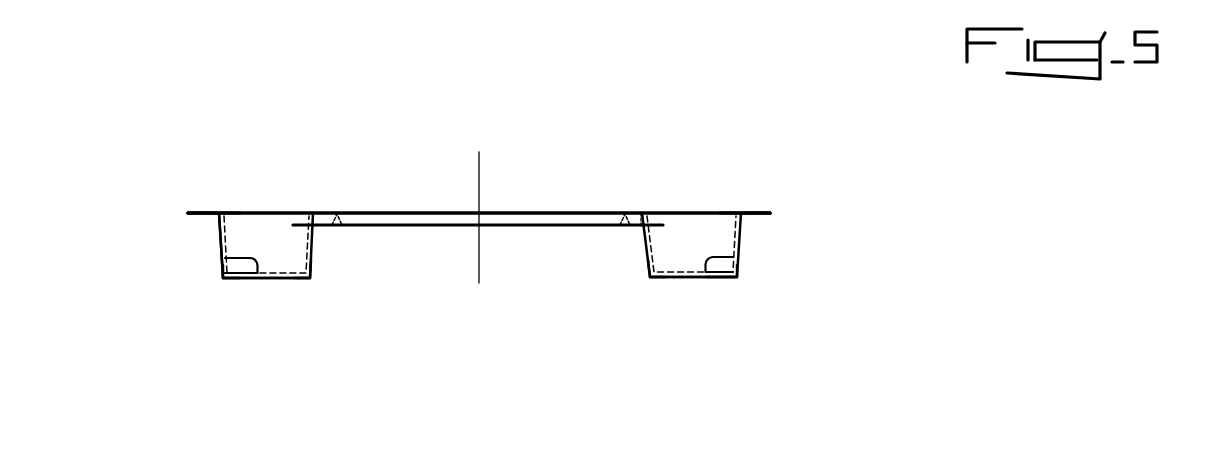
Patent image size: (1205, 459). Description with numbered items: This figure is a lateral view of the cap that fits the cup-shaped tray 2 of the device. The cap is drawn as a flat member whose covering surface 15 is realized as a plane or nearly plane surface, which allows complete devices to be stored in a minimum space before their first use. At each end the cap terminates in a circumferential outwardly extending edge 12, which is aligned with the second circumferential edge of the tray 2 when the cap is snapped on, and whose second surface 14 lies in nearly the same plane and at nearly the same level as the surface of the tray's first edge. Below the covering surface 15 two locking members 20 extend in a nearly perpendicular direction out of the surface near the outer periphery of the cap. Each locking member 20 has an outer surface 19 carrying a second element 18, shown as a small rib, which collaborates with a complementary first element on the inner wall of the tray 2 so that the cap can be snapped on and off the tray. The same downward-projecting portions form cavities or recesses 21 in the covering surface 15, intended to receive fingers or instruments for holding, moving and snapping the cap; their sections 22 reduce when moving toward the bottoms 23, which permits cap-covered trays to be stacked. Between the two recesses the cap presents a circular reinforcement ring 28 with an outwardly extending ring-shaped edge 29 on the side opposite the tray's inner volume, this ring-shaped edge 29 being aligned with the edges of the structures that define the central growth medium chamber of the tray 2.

The cup-shaped tray 2 is at (583, 0).
The circumferential outwardly extending edge 12 is at (205, 213).
The second surface 14 is at (192, 207).
The surface of the cap 15 is at (455, 210).
The second element 18 is at (235, 280).
The outer surface 19 is at (210, 230).
The locking member 20 is at (310, 280).
The cavity or recess 21 is at (257, 230).
The section 22 is at (222, 266).
The bottom 23 is at (271, 280).
The circular reinforcement ring 28 is at (517, 219).
The ring-shaped edge 29 is at (337, 199).